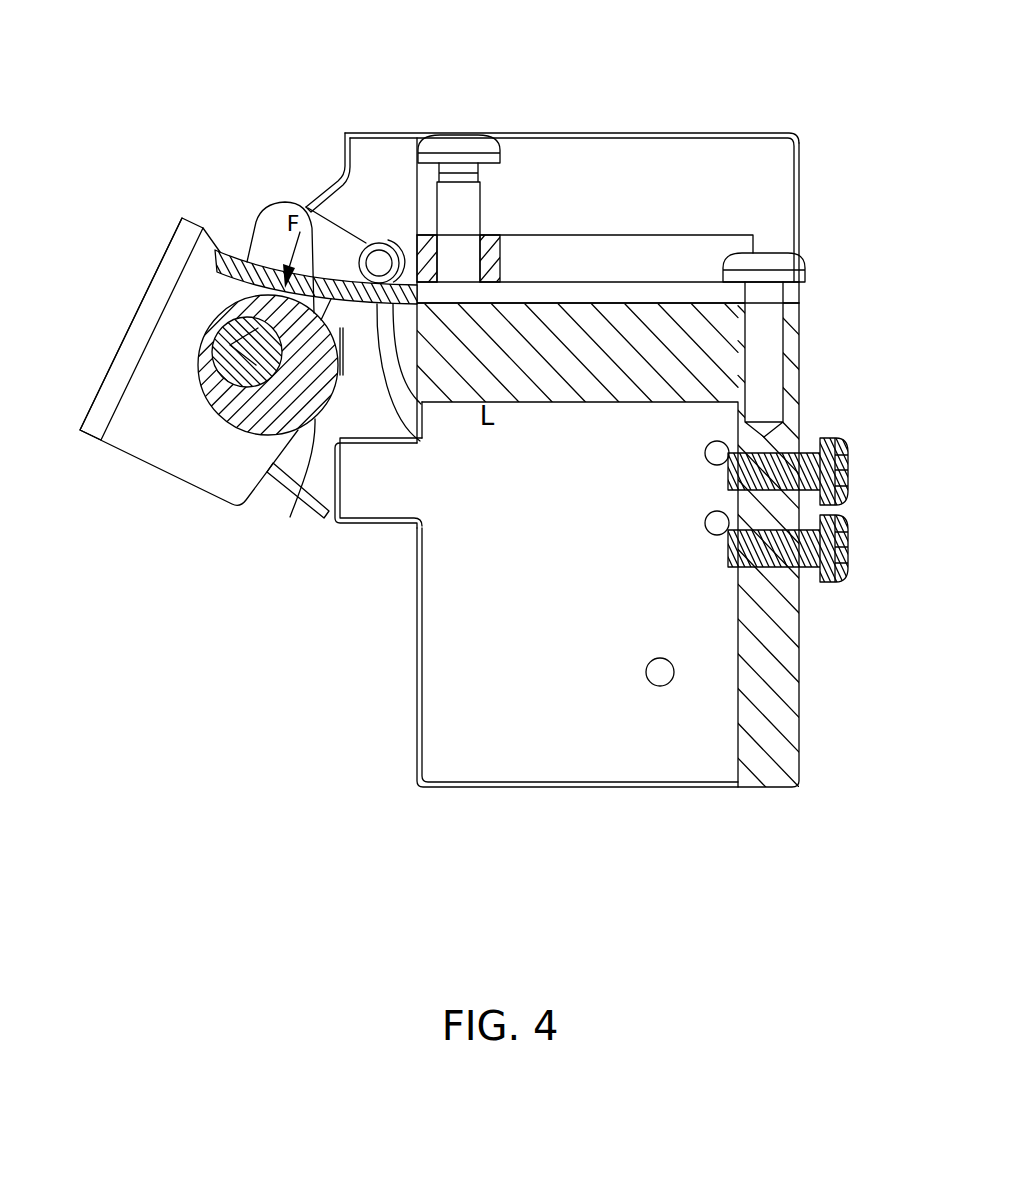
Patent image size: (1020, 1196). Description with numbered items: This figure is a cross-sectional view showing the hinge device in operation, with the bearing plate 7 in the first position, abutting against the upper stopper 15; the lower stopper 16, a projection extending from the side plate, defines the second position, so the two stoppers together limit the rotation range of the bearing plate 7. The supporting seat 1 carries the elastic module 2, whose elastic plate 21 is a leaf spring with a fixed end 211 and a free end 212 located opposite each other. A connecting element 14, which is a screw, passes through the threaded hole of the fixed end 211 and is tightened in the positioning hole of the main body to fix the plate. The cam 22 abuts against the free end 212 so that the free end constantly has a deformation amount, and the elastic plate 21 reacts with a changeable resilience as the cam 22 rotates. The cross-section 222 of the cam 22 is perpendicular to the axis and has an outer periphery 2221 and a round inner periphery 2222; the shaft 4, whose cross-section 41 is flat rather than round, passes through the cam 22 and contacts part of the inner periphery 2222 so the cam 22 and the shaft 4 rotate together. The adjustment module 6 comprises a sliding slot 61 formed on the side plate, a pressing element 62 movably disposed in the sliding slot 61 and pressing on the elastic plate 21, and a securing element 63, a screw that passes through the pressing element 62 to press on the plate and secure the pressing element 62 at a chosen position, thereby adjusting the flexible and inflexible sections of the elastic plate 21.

The supporting seat 1 is at (788, 688).
The elastic module 2 is at (388, 66).
The elastic plate 21 is at (430, 293).
The fixed end 211 is at (795, 292).
The free end 212 is at (250, 270).
The cam 22 is at (308, 210).
The cross-section 222 is at (217, 390).
The outer periphery 2221 is at (293, 509).
The inner periphery 2222 is at (210, 318).
The shaft 4 is at (227, 340).
The cross-section 41 is at (223, 360).
The bearing plate 7 is at (180, 240).
The adjustment module 6 is at (438, 66).
The sliding slot 61 is at (598, 250).
The pressing element 62 is at (490, 248).
The securing element 63 is at (456, 157).
The connecting element 14 is at (797, 263).
The upper stopper 15 is at (422, 404).
The lower stopper 16 is at (368, 490).